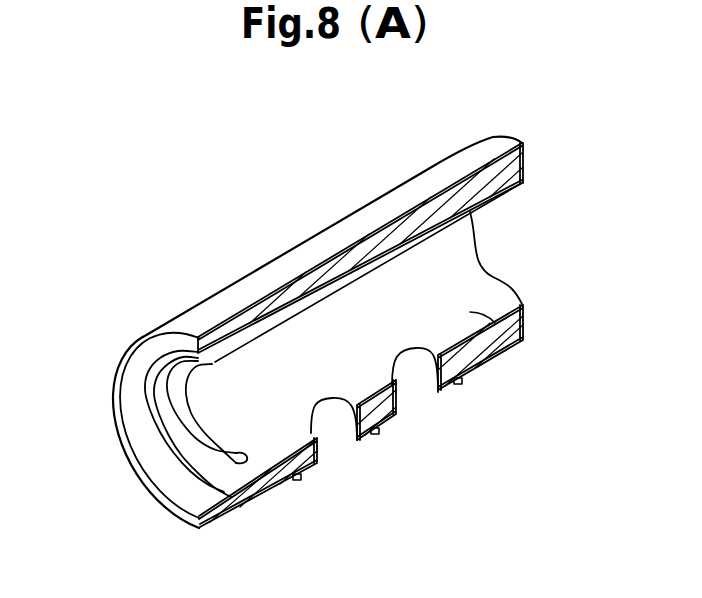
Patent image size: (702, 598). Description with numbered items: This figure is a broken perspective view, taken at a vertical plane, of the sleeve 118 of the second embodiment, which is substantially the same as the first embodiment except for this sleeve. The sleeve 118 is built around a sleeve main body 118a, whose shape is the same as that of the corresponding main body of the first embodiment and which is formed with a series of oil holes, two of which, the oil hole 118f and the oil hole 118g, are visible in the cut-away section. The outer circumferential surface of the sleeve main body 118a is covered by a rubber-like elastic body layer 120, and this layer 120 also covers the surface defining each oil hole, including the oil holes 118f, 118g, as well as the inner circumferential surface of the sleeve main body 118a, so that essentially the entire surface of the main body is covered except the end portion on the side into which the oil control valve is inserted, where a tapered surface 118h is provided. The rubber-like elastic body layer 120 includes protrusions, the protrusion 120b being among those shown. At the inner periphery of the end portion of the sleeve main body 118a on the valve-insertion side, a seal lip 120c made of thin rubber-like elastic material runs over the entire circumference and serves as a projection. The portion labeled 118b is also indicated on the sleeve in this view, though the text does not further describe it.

The sleeve 118 is at (252, 182).
The sleeve main body 118a is at (513, 183).
The rim surface of half-pipe member 118b is at (350, 317).
The oil hole 118f is at (330, 417).
The oil hole 118g is at (412, 370).
The tapered surface 118h is at (148, 437).
The rubber-like elastic body layer 120 is at (465, 160).
The protrusion 120b is at (298, 481).
The seal lip 120c is at (246, 350).